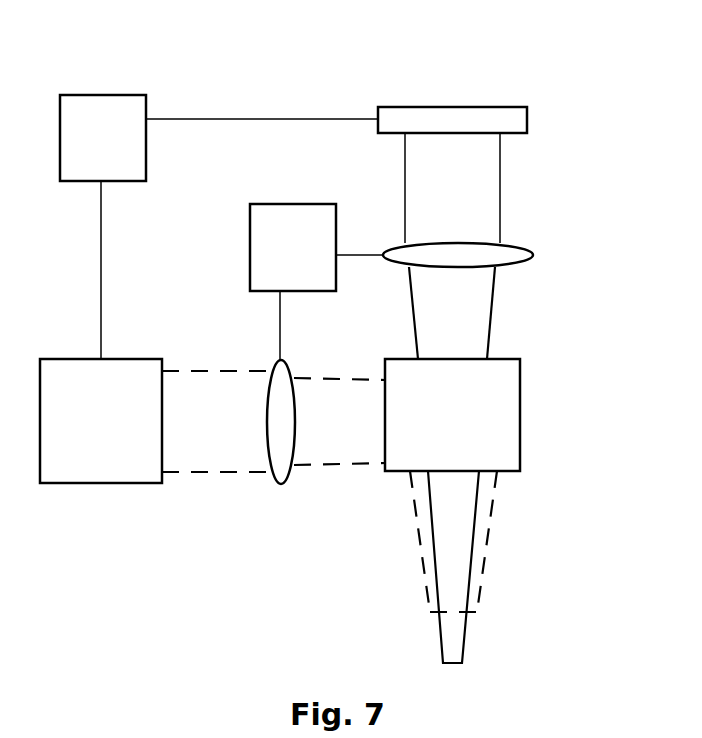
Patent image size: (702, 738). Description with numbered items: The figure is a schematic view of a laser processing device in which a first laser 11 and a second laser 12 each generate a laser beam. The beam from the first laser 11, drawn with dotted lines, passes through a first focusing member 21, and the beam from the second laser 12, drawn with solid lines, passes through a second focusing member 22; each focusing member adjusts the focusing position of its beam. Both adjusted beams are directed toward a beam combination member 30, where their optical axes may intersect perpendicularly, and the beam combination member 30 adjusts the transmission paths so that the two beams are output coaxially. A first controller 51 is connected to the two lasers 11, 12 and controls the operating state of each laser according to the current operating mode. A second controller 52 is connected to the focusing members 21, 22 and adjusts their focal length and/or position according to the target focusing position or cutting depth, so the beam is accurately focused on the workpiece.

The first controller 51 is at (90, 95).
The second laser 12 is at (503, 107).
The second focusing member 22 is at (510, 243).
The second controller 52 is at (282, 204).
The first laser 11 is at (140, 359).
The first focusing member 21 is at (292, 362).
The beam combination member 30 is at (520, 392).